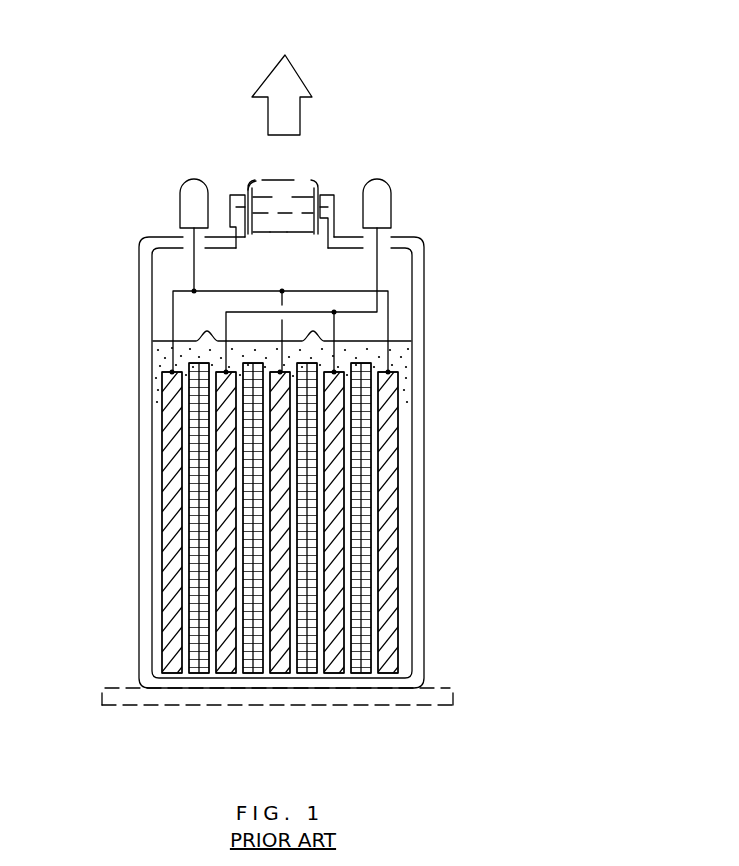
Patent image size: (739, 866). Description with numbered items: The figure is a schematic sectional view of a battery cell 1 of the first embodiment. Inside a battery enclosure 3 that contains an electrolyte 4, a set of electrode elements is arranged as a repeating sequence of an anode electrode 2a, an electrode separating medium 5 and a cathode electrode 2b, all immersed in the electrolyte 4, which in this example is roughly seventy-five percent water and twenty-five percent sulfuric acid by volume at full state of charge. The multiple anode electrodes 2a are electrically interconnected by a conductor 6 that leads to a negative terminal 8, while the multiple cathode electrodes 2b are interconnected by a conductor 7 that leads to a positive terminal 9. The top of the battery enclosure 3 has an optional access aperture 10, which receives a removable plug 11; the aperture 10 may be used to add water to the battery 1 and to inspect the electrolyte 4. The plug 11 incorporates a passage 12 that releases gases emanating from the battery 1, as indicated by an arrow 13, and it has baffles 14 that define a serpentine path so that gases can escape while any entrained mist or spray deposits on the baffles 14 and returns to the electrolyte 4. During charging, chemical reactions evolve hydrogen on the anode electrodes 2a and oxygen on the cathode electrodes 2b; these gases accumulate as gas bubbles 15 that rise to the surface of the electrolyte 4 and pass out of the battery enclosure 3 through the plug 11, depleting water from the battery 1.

The battery cell 1 is at (498, 348).
The anode electrode 2a is at (169, 593).
The cathode electrode 2b is at (223, 668).
The battery enclosure 3 is at (416, 474).
The electrolyte 4 is at (408, 364).
The electrode separating medium 5 is at (192, 667).
The conductor 6 is at (172, 300).
The conductor 7 is at (379, 266).
The negative terminal 8 is at (184, 182).
The positive terminal 9 is at (390, 184).
The access aperture 10 is at (326, 196).
The removable plug 11 is at (316, 182).
The passage 12 is at (282, 233).
The arrow 13 is at (310, 73).
The baffles 14 is at (264, 194).
The gas bubbles 15 is at (333, 338).